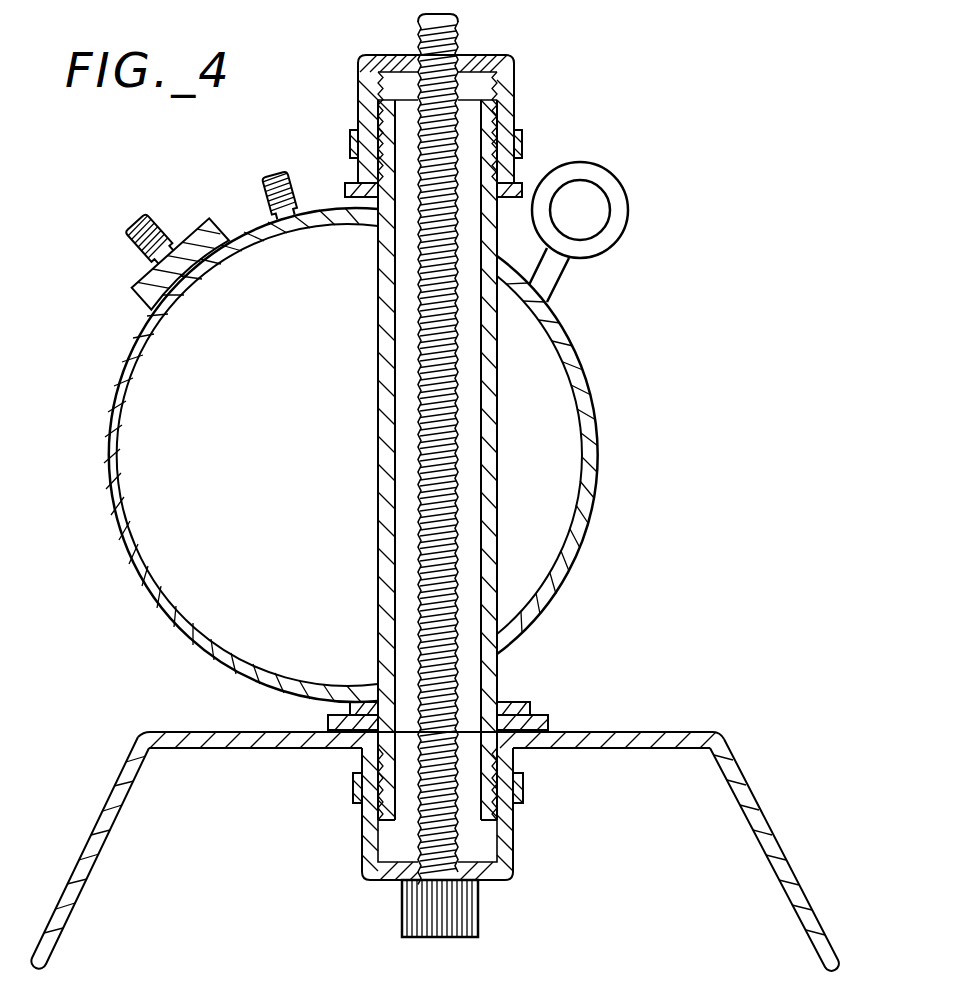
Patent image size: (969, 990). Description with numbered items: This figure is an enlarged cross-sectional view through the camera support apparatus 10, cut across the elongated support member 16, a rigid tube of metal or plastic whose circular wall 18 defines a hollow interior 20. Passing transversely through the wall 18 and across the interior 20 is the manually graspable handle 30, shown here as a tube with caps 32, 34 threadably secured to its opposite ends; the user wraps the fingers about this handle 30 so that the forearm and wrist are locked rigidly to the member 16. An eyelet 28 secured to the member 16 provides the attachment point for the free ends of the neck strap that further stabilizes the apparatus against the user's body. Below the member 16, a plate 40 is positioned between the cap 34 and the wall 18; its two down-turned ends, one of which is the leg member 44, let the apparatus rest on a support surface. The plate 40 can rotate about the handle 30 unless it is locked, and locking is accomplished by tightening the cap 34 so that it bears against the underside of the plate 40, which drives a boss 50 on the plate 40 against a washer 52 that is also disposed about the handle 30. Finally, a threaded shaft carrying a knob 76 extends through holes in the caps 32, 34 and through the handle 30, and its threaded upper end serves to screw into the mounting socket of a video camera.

The apparatus 10 is at (578, 325).
The elongated support member 16 is at (192, 630).
The circular wall 18 is at (121, 532).
The hollow interior 20 is at (572, 450).
The eyelet 28 is at (566, 163).
The manually graspable handle 30 is at (500, 430).
The cap 32 is at (514, 70).
The cap 34 is at (514, 845).
The plate 40 is at (720, 730).
The down-turned end 44 is at (118, 782).
The boss 50 is at (533, 715).
The washer 52 is at (518, 700).
The knob 76 is at (465, 932).